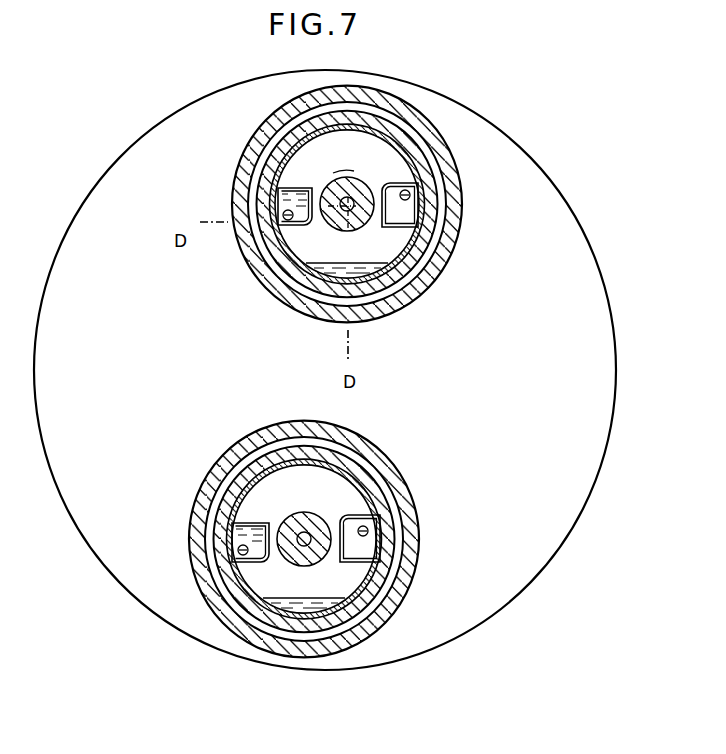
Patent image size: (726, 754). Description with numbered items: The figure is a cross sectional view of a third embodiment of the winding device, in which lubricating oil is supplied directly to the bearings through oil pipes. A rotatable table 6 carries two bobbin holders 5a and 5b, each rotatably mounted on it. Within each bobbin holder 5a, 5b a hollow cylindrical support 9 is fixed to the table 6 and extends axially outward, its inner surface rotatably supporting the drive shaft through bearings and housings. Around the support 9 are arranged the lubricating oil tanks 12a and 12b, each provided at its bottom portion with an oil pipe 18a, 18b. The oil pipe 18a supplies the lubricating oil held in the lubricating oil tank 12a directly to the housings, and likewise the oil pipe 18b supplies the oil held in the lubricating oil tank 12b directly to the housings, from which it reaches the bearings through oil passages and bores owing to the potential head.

The table 6 is at (545, 247).
The bobbin holder 5a is at (450, 244).
The bobbin holder 5b is at (411, 491).
The hollow cylindrical support 9 is at (452, 210).
The lubricating oil tank 12a is at (291, 228).
The lubricating oil tank 12b is at (398, 184).
The oil pipe 18a is at (290, 210).
The oil pipe 18b is at (404, 201).